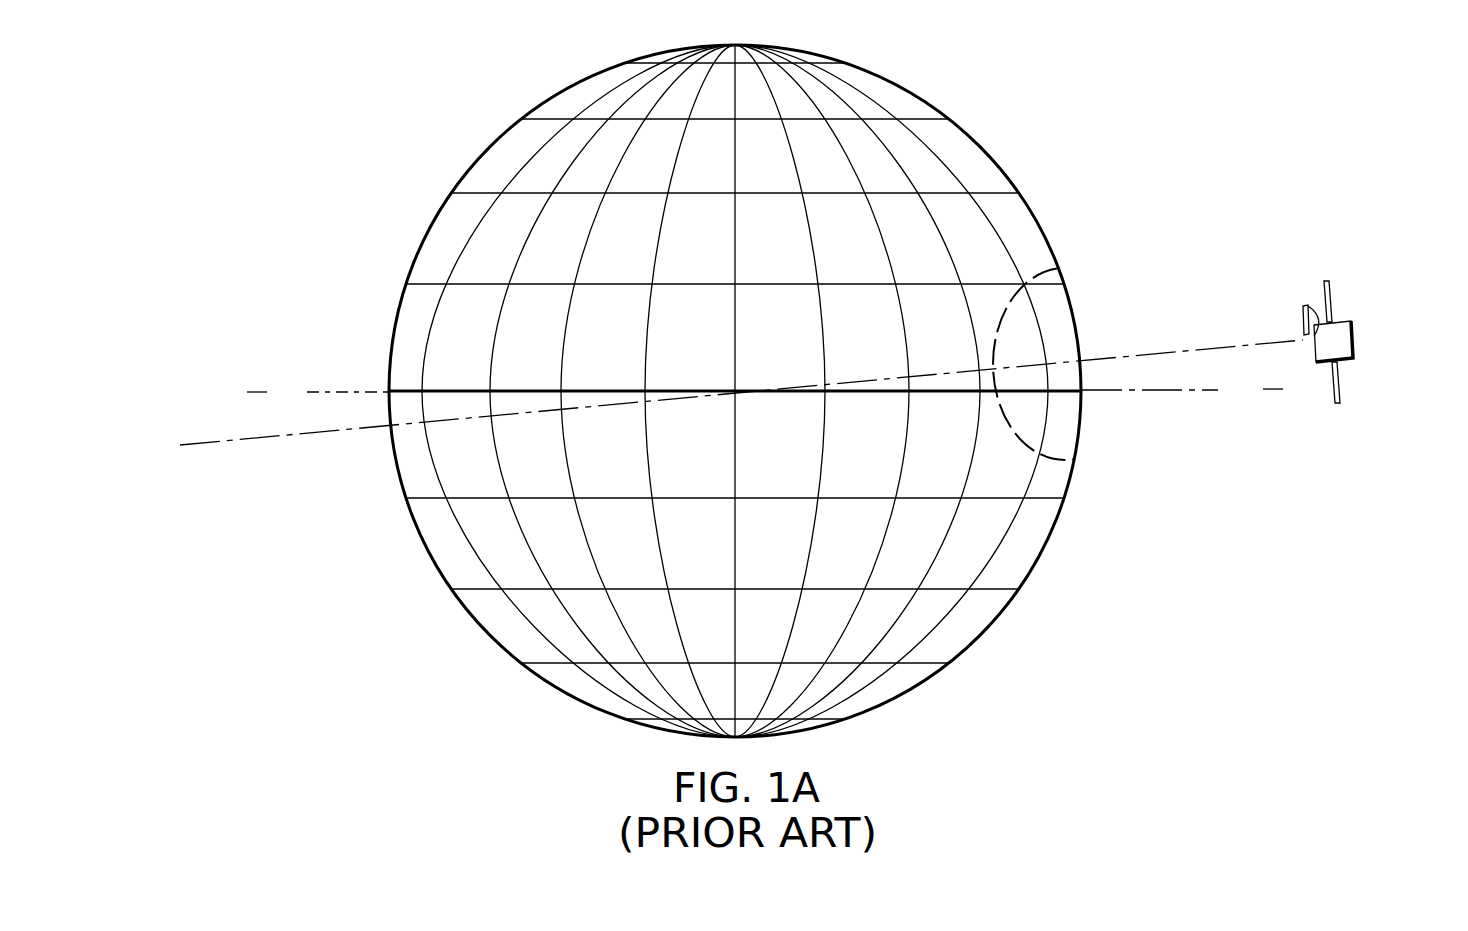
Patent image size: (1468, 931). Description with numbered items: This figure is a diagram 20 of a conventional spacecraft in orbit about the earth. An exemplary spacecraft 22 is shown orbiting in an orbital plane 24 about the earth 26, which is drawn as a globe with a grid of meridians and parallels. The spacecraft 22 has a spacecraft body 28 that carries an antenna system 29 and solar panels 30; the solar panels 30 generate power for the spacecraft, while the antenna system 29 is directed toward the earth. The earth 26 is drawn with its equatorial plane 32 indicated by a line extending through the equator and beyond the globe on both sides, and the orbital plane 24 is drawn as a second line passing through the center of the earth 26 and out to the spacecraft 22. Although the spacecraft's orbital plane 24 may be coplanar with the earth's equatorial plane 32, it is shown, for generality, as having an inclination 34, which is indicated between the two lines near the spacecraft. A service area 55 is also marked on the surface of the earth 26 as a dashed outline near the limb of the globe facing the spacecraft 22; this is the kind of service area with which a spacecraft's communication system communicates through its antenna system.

The diagram 20 is at (333, 140).
The spacecraft 22 is at (1364, 355).
The orbital plane 24 is at (741, 392).
The earth 26 is at (995, 623).
The spacecraft body 28 is at (1354, 331).
The antenna system 29 is at (1300, 318).
The solar panels 30 is at (1343, 395).
The equatorial plane 32 is at (765, 389).
The inclination 34 is at (1198, 433).
The service area 55 is at (1032, 270).